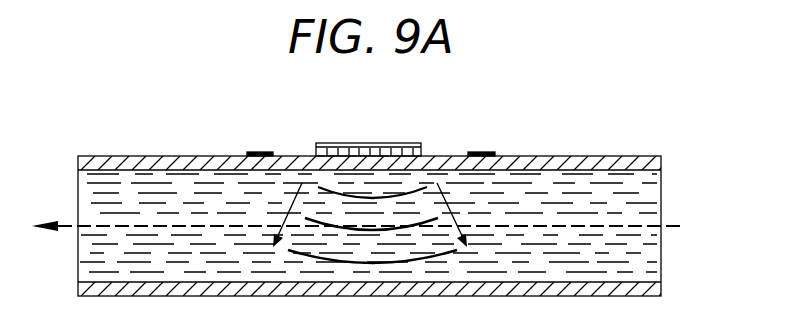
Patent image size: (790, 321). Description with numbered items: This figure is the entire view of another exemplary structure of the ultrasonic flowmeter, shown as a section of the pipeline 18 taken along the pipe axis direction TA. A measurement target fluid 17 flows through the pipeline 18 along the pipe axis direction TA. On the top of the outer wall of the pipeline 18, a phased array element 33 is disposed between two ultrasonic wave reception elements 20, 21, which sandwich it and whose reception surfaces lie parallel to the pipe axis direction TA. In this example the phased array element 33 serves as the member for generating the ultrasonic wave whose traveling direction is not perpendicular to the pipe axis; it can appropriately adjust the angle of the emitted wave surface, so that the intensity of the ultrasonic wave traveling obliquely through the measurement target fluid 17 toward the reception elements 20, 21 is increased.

The measurement target fluid 17 is at (648, 252).
The pipeline 18 is at (640, 156).
The ultrasonic wave reception element 20 is at (262, 151).
The ultrasonic wave reception element 21 is at (485, 151).
The phased array element 33 is at (414, 142).
The pipe axis direction TA is at (70, 226).